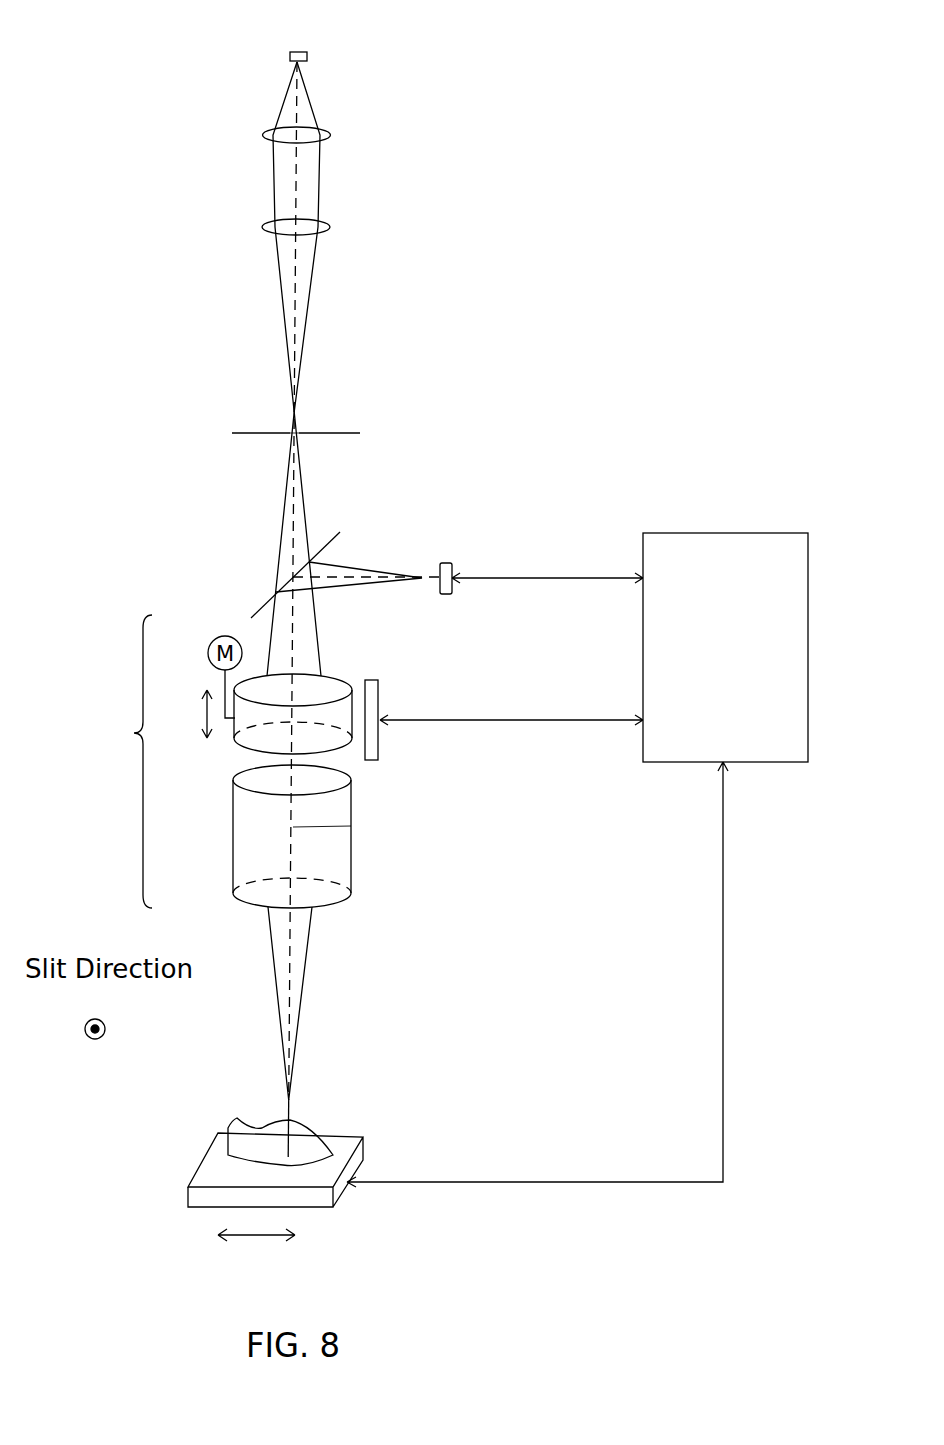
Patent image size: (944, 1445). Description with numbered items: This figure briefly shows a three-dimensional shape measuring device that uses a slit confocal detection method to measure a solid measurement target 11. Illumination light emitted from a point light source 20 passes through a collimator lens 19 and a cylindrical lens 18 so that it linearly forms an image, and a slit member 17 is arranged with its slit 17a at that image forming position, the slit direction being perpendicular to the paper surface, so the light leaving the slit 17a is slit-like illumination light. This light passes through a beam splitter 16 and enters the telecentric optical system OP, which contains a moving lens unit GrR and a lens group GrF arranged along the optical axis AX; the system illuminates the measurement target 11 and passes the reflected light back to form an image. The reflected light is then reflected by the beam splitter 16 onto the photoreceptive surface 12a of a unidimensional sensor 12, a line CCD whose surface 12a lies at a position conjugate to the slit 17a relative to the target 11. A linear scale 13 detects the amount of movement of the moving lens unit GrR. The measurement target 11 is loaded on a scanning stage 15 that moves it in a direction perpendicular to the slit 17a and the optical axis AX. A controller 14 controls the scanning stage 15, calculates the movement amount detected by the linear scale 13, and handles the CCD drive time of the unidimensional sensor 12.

The light source 20 is at (312, 52).
The collimator lens 19 is at (320, 143).
The cylindrical lens 18 is at (318, 236).
The slit member 17 is at (331, 435).
The slit 17a is at (281, 453).
The beam splitter 16 is at (262, 607).
The unidimensional sensor 12 is at (469, 584).
The photoreceptive surface 12a is at (437, 563).
The controller 14 is at (692, 533).
The linear scale 13 is at (378, 750).
The measurement target 11 is at (268, 1140).
The scanning stage 15 is at (317, 1213).
The telecentric optical system OP is at (119, 761).
The moving lens unit GrR is at (257, 715).
The fixed lens group GrF is at (330, 843).
The optical axis AX is at (351, 826).